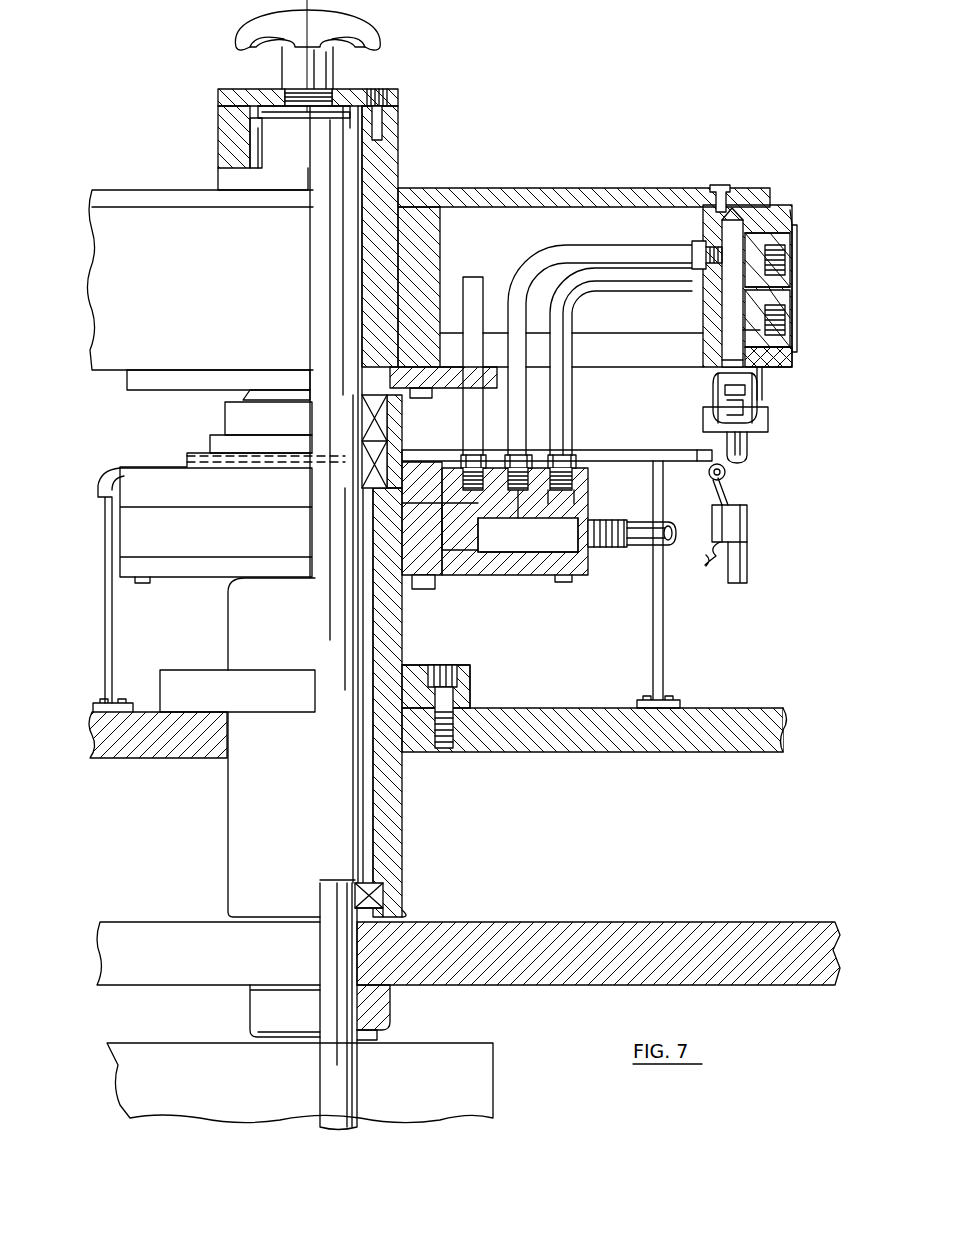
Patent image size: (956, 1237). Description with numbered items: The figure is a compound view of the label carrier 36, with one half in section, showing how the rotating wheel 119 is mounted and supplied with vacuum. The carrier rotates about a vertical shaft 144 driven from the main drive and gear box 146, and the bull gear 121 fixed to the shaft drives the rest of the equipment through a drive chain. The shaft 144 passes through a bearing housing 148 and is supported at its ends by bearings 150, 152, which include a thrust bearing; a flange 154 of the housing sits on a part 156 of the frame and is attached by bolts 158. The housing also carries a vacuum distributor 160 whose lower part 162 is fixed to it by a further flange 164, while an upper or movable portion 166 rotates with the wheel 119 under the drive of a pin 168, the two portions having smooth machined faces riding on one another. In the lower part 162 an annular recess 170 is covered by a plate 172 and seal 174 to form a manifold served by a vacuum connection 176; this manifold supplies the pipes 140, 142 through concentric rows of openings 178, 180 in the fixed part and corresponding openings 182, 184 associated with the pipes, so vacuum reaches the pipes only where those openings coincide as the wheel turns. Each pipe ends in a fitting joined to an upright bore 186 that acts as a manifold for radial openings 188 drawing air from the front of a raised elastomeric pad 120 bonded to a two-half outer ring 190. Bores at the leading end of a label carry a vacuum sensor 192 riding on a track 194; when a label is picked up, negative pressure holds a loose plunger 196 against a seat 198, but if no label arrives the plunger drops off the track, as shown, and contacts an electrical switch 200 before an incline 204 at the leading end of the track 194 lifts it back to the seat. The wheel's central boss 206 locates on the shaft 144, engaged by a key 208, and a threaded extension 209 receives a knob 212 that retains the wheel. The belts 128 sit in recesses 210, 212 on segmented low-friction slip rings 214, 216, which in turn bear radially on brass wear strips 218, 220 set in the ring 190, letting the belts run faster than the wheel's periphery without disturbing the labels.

The label carrier 36 is at (566, 70).
The wheel 119 is at (580, 188).
The pad 120 is at (790, 362).
The bull gear 121 is at (608, 925).
The belts 128 is at (790, 258).
The pipe 140 is at (522, 320).
The pipe 142 is at (560, 298).
The vertical shaft 144 is at (367, 838).
The main drive and gear box 146 is at (495, 1057).
The bearing housing 148 is at (402, 804).
The bearing 150 is at (380, 892).
The bearing 152 is at (387, 428).
The flange 154 is at (190, 678).
The part of the frame 156 is at (186, 748).
The bolts 158 is at (446, 665).
The vacuum distributor 160 is at (535, 572).
The lower part 162 is at (458, 556).
The further flange 164 is at (424, 589).
The upper or movable portion 166 is at (580, 470).
The pin 168 is at (487, 280).
The annular recess 170 is at (592, 520).
The plate 172 is at (500, 560).
The seal 174 is at (586, 556).
The vacuum connection 176 is at (668, 545).
The opening 178 is at (576, 518).
The opening 180 is at (518, 492).
The opening 182 is at (560, 490).
The opening 184 is at (545, 492).
The upright bore 186 is at (712, 318).
The radial openings 188 is at (772, 233).
The outer ring 190 is at (757, 395).
The vacuum sensor 192 is at (748, 440).
The track 194 is at (632, 450).
The loose plunger 196 is at (747, 462).
The seat 198 is at (713, 398).
The electrical switch 200 is at (758, 530).
The incline 204 is at (106, 470).
The central boss 206 is at (398, 156).
The key 208 is at (248, 158).
The extension 209 is at (280, 106).
The retainer 210 is at (790, 218).
The knob 212 is at (336, 62).
The slip ring 214 is at (722, 268).
The slip ring 216 is at (743, 333).
The brass wear strip 218 is at (722, 238).
The brass wear strip 220 is at (722, 358).